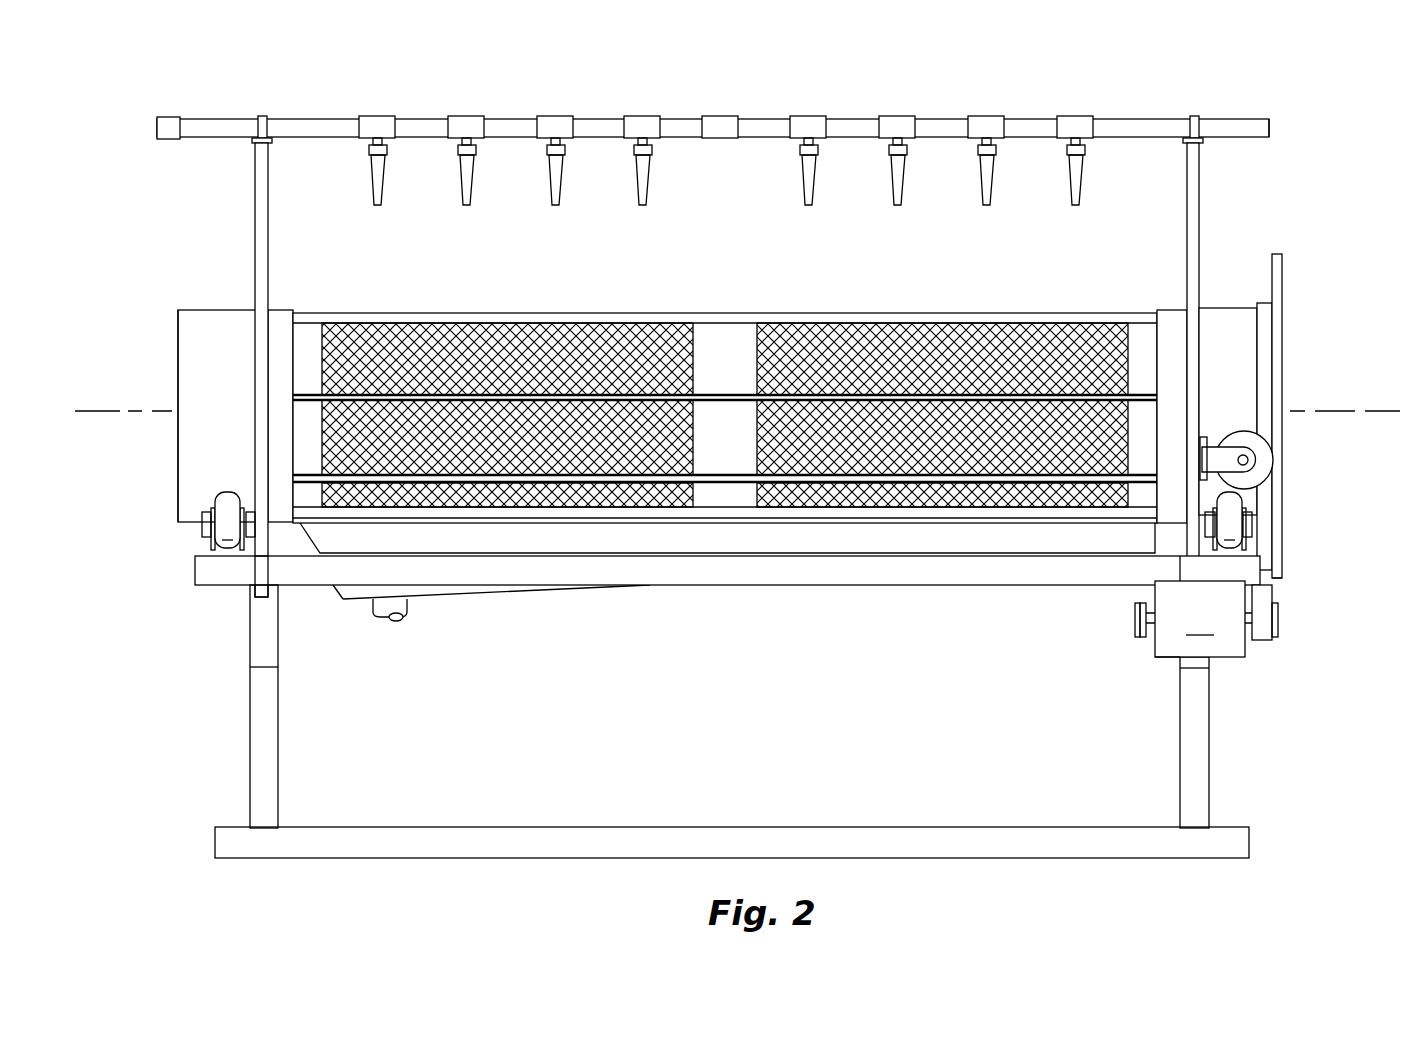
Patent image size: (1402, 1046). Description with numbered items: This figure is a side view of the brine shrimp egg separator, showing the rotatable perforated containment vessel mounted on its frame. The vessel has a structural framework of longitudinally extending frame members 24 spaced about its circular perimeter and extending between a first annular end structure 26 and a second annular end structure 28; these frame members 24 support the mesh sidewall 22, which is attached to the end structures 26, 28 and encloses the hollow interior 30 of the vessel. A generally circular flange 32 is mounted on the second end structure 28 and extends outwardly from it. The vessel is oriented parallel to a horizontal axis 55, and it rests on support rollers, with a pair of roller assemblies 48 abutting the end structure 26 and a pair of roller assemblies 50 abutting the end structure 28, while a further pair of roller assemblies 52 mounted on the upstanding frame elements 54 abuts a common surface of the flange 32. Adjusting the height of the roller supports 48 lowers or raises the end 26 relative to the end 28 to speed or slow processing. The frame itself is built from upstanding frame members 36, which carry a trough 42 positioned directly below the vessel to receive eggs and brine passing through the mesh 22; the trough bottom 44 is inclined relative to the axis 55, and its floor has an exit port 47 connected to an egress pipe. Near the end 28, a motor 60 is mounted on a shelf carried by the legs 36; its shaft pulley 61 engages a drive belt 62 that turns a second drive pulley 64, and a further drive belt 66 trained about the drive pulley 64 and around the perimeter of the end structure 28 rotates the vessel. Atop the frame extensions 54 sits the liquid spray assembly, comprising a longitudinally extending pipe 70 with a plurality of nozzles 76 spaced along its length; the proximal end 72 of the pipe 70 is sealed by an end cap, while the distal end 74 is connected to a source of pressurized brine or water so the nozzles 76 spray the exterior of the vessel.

The mesh sidewall 22 is at (567, 345).
The longitudinally extending frame members 24 is at (440, 313).
The first annular end structure 26 is at (212, 322).
The second annular end structure 28 is at (1222, 308).
The hollow interior 30 is at (178, 390).
The circular flange 32 is at (1282, 290).
The upstanding frame members 36 is at (278, 717).
The trough 42 is at (726, 540).
The pan bottom 44 is at (595, 570).
The exit port 47 is at (413, 602).
The support rollers 48 is at (230, 515).
The support rollers 50 is at (1232, 502).
The roller assemblies 52 is at (1263, 458).
The upstanding frame elements 54 is at (253, 155).
The horizontal axis 55 is at (90, 410).
The motor 60 is at (1200, 619).
The pulley 61 is at (1135, 623).
The drive belt 62 is at (1150, 657).
The drive pulley 64 is at (1277, 625).
The drive belt 66 is at (1275, 587).
The pipe 70 is at (280, 119).
The proximal end 72 is at (170, 117).
The distal end 74 is at (1270, 128).
The nozzles 76 is at (805, 180).